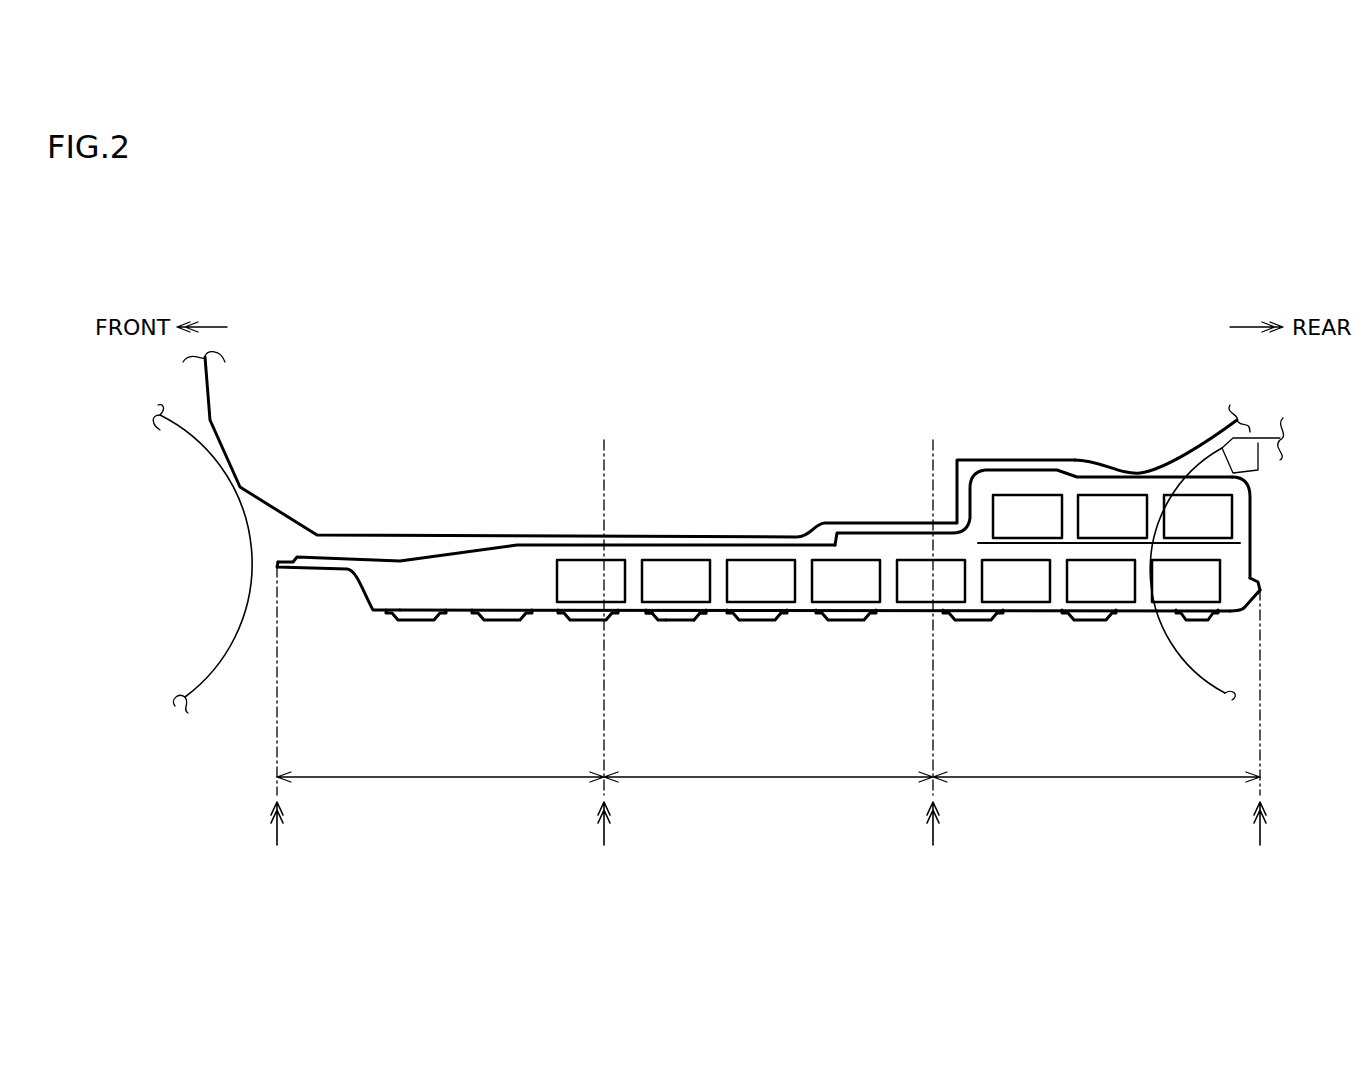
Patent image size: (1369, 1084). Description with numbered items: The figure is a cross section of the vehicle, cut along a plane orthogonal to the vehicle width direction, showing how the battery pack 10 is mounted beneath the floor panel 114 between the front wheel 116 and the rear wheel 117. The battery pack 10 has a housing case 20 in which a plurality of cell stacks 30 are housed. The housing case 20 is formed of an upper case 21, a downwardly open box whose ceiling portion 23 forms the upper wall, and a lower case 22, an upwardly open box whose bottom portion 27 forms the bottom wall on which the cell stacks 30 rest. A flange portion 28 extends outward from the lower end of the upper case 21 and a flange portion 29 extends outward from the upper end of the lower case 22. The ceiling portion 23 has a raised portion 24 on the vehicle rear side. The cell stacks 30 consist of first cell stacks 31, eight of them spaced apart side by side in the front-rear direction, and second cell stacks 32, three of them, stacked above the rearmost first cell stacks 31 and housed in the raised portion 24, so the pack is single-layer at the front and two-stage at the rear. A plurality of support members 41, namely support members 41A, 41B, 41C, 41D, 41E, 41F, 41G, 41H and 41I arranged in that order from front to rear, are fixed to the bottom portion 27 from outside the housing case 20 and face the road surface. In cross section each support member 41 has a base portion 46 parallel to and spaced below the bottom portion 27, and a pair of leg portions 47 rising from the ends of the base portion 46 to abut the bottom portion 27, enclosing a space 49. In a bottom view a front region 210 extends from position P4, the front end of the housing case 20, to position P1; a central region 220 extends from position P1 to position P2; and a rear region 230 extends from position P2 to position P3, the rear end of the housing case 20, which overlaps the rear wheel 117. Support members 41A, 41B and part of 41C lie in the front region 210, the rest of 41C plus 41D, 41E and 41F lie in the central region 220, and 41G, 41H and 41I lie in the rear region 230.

The battery pack 10 is at (1277, 504).
The housing case 20 is at (104, 525).
The upper case 21 is at (308, 552).
The lower case 22 is at (310, 572).
The ceiling portion 23 is at (708, 544).
The raised portion 24 is at (1077, 459).
The bottom portion 27 is at (912, 612).
The flange portion 28 is at (1257, 583).
The flange portion 29 is at (1258, 590).
The cell stacks 30 is at (941, 531).
The first cell stacks 31 is at (570, 596).
The second cell stacks 32 is at (1027, 508).
The support members 41 is at (866, 680).
The support member 41A is at (407, 622).
The support member 41B is at (492, 622).
The support member 41C is at (582, 622).
The support member 41D is at (680, 623).
The support member 41E is at (772, 622).
The support member 41F is at (847, 622).
The support member 41G is at (972, 622).
The support member 41H is at (1095, 622).
The support member 41I is at (1200, 623).
The base portion 46 is at (682, 621).
The leg portions 47 is at (654, 613).
The space 49 is at (662, 620).
The floor panel 114 is at (652, 536).
The front wheel 116 is at (200, 652).
The rear wheel 117 is at (1176, 650).
The front region 210 is at (443, 780).
The central region 220 is at (769, 780).
The rear region 230 is at (1097, 780).
The position P1 is at (604, 656).
The position P2 is at (933, 656).
The position P3 is at (1260, 731).
The position P4 is at (277, 719).